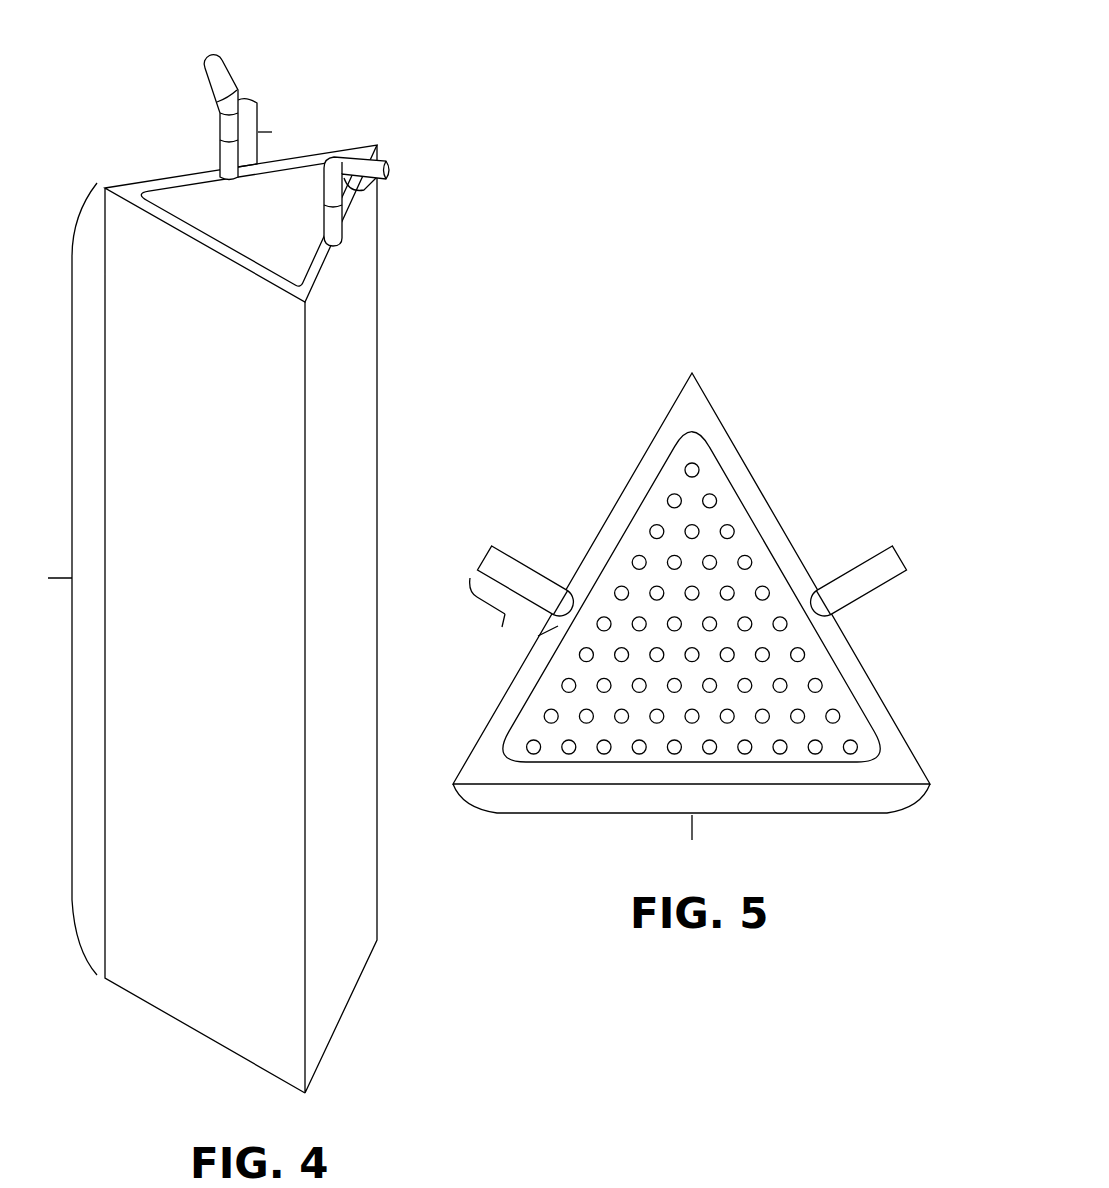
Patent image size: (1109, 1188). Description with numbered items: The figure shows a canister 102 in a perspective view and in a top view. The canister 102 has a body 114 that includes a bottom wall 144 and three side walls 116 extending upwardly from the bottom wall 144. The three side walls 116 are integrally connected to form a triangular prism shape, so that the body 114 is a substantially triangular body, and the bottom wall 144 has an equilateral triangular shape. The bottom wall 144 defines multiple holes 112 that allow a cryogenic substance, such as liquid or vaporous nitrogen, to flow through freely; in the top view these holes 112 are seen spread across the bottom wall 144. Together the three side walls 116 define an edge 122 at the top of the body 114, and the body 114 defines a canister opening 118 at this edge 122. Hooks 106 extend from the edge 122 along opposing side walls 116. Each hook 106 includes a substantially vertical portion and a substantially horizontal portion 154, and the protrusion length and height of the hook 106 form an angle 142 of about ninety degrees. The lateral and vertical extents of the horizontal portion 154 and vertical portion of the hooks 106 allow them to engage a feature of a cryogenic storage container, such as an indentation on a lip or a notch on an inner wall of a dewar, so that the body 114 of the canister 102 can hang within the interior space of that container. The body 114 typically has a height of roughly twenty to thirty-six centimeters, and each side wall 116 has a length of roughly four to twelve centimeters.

In FIG. 4, the canister 102 is at (274, 552).
In FIG. 5, the canister 102 is at (701, 601).
In FIG. 4, the hooks 106 is at (362, 136).
In FIG. 5, the hooks 106 is at (714, 526).
In FIG. 5, the holes 112 is at (748, 560).
In FIG. 4, the body 114 is at (296, 610).
In FIG. 4, the side walls 116 is at (355, 430).
In FIG. 4, the canister opening 118 is at (240, 200).
In FIG. 4, the edge 122 is at (337, 267).
In FIG. 4, the angle 142 is at (385, 174).
In FIG. 5, the bottom wall 144 is at (691, 562).
In FIG. 5, the horizontal portion 154 is at (510, 567).